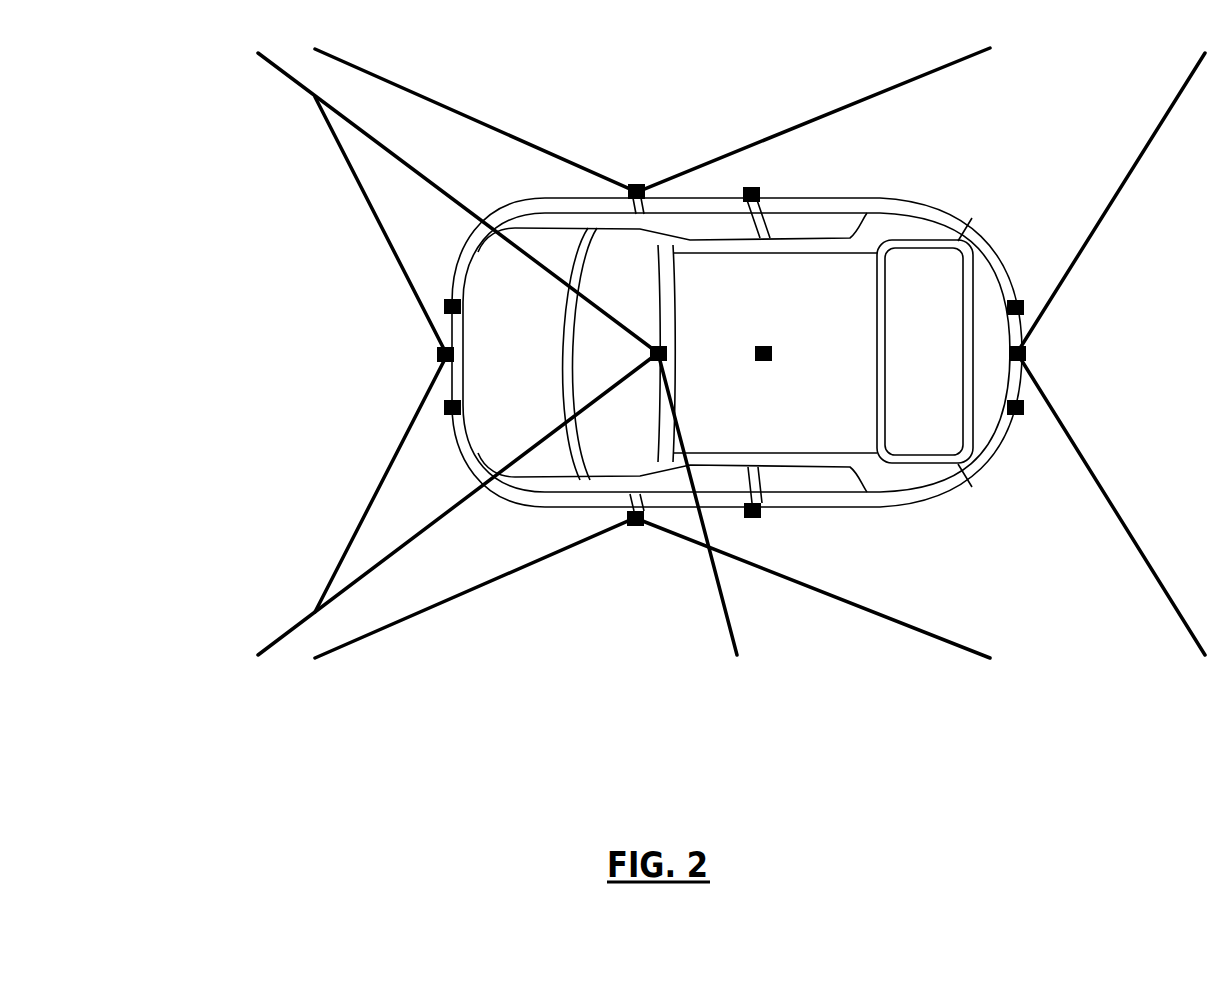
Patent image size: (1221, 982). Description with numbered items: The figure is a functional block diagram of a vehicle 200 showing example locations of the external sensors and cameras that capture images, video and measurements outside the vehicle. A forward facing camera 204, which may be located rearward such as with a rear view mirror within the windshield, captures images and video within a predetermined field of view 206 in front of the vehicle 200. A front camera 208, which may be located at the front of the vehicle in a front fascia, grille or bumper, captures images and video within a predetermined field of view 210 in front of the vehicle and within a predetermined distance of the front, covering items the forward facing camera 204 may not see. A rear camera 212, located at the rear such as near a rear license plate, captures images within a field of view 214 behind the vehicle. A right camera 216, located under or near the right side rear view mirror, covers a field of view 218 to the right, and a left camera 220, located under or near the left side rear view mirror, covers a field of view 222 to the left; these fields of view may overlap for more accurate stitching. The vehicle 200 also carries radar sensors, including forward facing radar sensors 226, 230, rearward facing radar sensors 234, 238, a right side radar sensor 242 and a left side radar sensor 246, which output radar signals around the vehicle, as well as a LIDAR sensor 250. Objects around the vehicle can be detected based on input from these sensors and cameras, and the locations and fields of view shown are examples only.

The vehicle 200 is at (190, 183).
The forward facing camera 204 is at (737, 655).
The field of view 206 is at (430, 185).
The front camera 208 is at (440, 355).
The field of view 210 is at (358, 187).
The rear camera 212 is at (1025, 355).
The field of view 214 is at (1122, 193).
The right camera 216 is at (633, 183).
The field of view 218 is at (402, 87).
The left camera 220 is at (637, 525).
The field of view 222 is at (763, 570).
The forward facing radar sensor 226 is at (445, 306).
The forward facing radar sensor 230 is at (445, 407).
The rearward facing radar sensor 234 is at (1023, 307).
The rearward facing radar sensor 238 is at (1023, 407).
The right side radar sensor 242 is at (757, 187).
The left side radar sensor 246 is at (756, 517).
The LIDAR sensor 250 is at (768, 360).